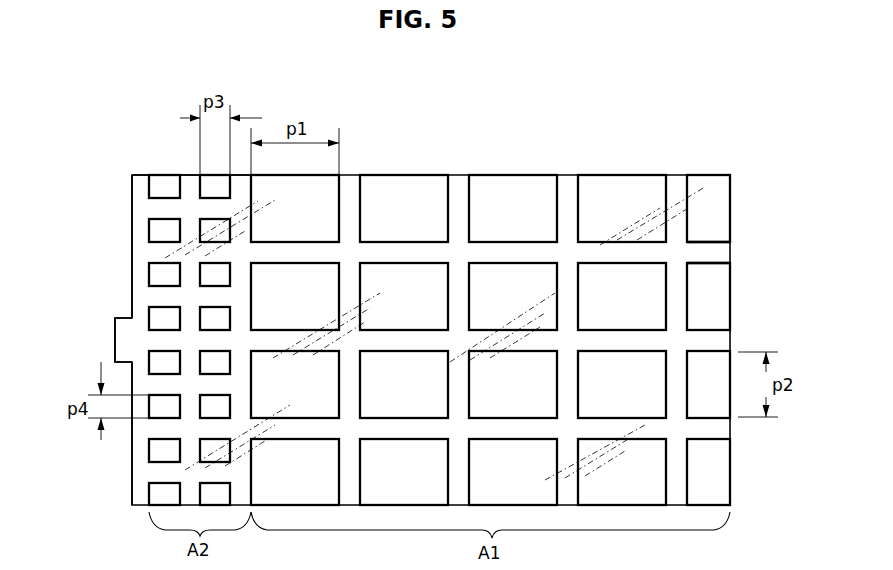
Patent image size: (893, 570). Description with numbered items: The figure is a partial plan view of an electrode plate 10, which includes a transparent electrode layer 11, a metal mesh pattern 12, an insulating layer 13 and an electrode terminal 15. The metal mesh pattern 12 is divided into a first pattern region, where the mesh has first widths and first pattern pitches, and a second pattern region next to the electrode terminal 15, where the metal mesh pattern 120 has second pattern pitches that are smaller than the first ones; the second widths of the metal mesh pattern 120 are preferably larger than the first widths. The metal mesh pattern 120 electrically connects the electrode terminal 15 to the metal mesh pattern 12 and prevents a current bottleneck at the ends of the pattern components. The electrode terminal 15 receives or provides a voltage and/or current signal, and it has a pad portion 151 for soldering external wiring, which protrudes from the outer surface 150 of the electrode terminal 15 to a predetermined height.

The electrode plate 10 is at (706, 149).
The transparent electrode layer 11 is at (653, 220).
The metal mesh pattern 12 is at (723, 253).
The insulating layer 13 is at (723, 302).
The electrode terminal 15 is at (140, 175).
The metal mesh pattern 120 is at (167, 298).
The outer surface 150 is at (132, 245).
The pad portion 151 is at (115, 337).